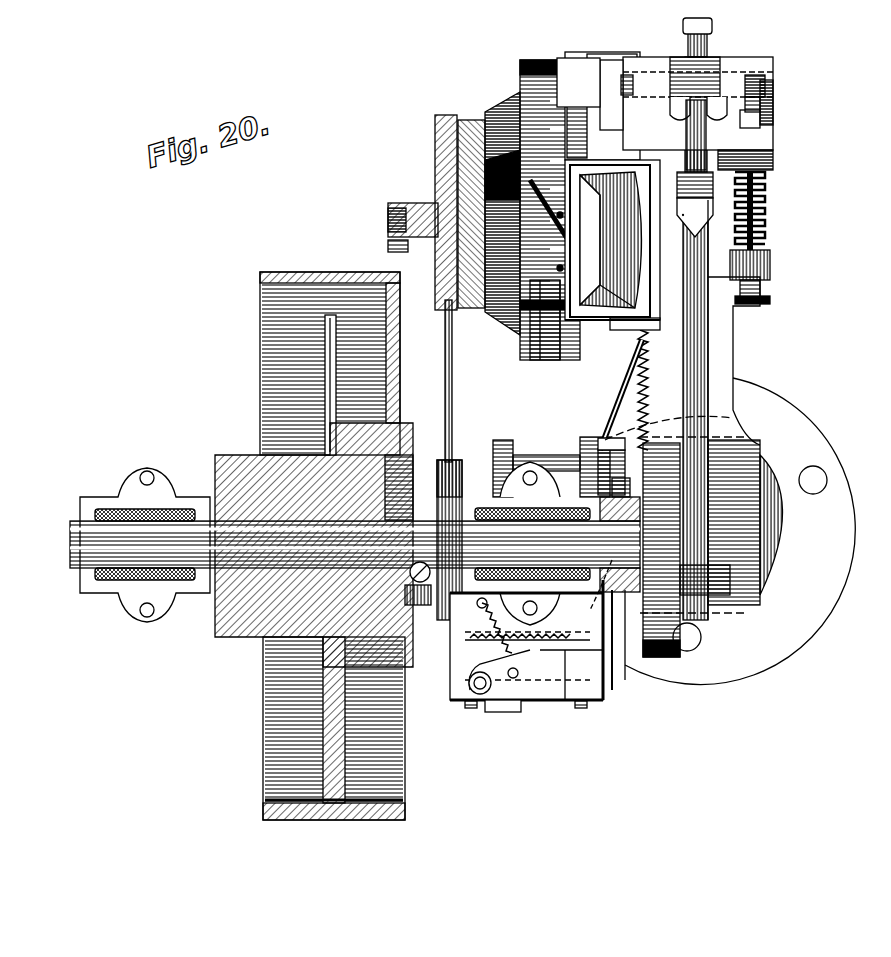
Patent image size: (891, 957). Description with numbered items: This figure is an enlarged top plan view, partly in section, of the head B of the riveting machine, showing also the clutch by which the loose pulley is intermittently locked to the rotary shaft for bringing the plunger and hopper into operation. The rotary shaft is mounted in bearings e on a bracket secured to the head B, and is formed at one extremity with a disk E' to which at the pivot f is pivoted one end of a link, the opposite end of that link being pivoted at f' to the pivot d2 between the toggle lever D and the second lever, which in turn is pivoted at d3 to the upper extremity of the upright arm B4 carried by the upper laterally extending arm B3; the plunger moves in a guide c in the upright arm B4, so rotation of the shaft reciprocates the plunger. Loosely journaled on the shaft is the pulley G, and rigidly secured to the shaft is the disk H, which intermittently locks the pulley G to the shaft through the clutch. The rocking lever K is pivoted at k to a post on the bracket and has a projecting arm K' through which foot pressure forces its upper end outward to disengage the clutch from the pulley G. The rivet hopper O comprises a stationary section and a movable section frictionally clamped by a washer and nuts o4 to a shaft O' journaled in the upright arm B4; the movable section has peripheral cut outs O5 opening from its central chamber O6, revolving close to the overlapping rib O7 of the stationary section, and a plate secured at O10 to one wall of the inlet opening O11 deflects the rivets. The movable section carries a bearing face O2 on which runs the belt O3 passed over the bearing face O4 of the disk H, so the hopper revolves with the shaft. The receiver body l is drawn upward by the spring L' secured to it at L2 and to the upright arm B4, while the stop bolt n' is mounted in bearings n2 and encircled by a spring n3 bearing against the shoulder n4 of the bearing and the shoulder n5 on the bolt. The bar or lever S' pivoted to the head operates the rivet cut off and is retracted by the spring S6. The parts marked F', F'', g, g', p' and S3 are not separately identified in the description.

The pulley G is at (290, 282).
The pivot F' is at (296, 545).
The bearings e is at (335, 545).
The disk H is at (440, 530).
The bearing face O4 is at (448, 470).
The rocking lever K is at (558, 649).
The pivot k is at (473, 705).
The disk E' is at (642, 642).
The projecting arm K' is at (623, 573).
The belt O3 is at (453, 385).
The bearing face O2 is at (440, 116).
The central chamber O6 is at (472, 120).
The shaft O' is at (466, 142).
The nuts o4 is at (402, 203).
The rivet hopper O is at (536, 205).
The cut outs O5 is at (530, 82).
The overlapping rib O7 is at (560, 110).
The link g is at (551, 206).
The inlet opening O11 is at (590, 210).
The securing point O10 is at (562, 216).
The bar or lever S' is at (656, 360).
The spring seat S3 is at (620, 331).
The spring S6 is at (625, 395).
The rod F'' is at (723, 410).
The lever D is at (680, 200).
The pivot d2 is at (683, 208).
The upright arm B4 is at (745, 70).
The guide c is at (710, 55).
The pivot d3 is at (627, 75).
The plunger p' is at (674, 135).
The catch g' is at (750, 124).
The spring attachment point L2 is at (765, 90).
The spring L' is at (782, 102).
The body or frame l is at (760, 118).
The bearings n2 is at (770, 165).
The shoulder n5 is at (770, 178).
The pivot f' is at (767, 208).
The stop bolt n' is at (776, 211).
The spring n3 is at (770, 240).
The shoulder n4 is at (770, 256).
The upper laterally extending arm B3 is at (738, 400).
The head B is at (792, 530).
The pivot f is at (686, 550).